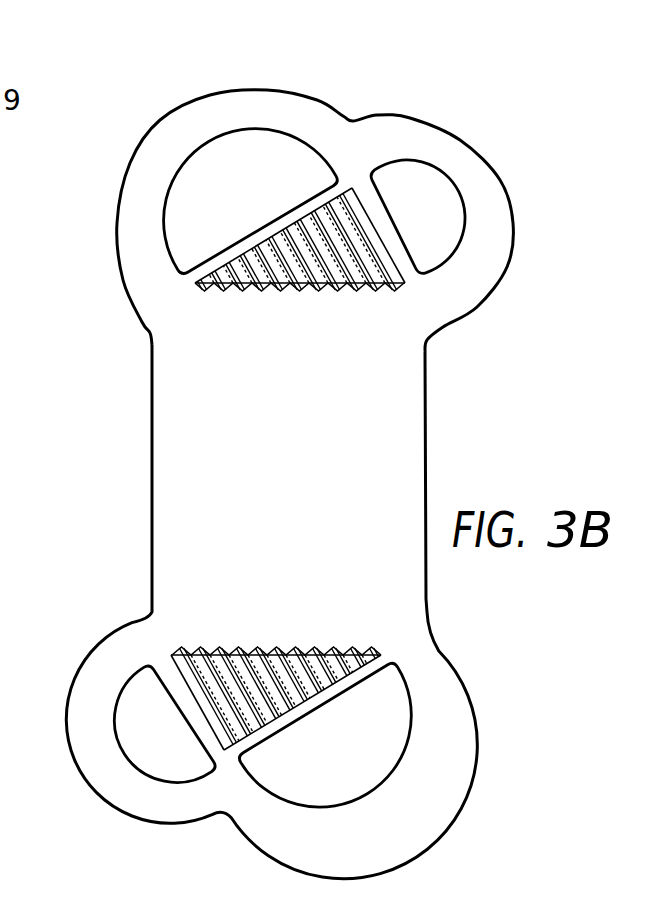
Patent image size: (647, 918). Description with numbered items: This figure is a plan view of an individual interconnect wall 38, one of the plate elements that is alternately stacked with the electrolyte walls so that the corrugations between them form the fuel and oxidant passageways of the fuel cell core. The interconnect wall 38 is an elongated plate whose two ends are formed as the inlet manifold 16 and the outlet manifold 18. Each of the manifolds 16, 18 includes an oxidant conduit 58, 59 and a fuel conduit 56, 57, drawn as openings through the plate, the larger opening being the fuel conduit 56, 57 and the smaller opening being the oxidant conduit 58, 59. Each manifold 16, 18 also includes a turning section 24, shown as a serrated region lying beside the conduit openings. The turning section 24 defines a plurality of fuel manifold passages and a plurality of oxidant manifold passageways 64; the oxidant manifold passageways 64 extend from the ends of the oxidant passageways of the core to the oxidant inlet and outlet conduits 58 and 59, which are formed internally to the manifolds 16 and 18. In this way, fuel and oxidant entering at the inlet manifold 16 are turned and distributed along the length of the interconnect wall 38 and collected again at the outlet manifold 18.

The inlet manifold 16 is at (223, 826).
The outlet manifold 18 is at (355, 113).
The turning section 24 is at (387, 242).
The interconnect wall 38 is at (437, 410).
The fuel conduit 56 is at (403, 753).
The fuel conduit 57 is at (217, 143).
The oxidant conduit 58 is at (120, 695).
The oxidant conduit 59 is at (428, 165).
The oxidant manifold passageways 64 is at (311, 275).